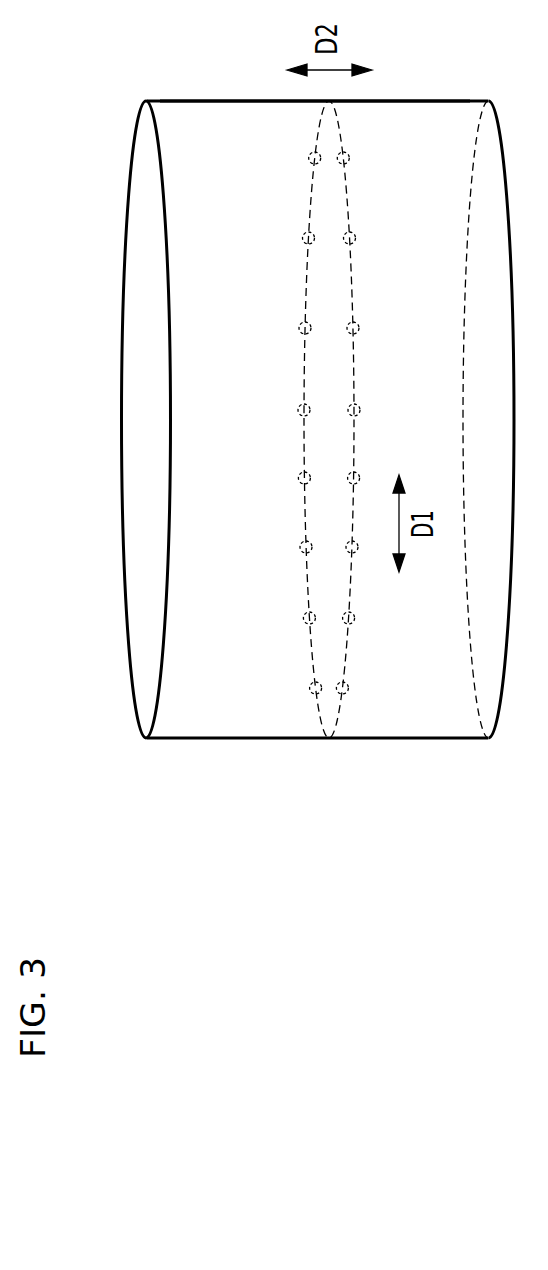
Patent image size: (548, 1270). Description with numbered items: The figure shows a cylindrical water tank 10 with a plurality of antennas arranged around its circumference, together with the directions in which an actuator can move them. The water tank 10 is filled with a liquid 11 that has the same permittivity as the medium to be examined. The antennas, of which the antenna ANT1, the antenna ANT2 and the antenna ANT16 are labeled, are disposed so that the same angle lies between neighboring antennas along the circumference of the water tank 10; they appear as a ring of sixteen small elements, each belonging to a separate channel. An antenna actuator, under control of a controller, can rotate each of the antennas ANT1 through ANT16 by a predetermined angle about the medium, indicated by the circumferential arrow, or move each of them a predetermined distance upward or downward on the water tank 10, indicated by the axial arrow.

The water tank 10 is at (170, 101).
The liquid 11 is at (241, 121).
The antenna ANT1 is at (346, 691).
The antenna ANT2 is at (352, 619).
The antenna ANT16 is at (317, 693).